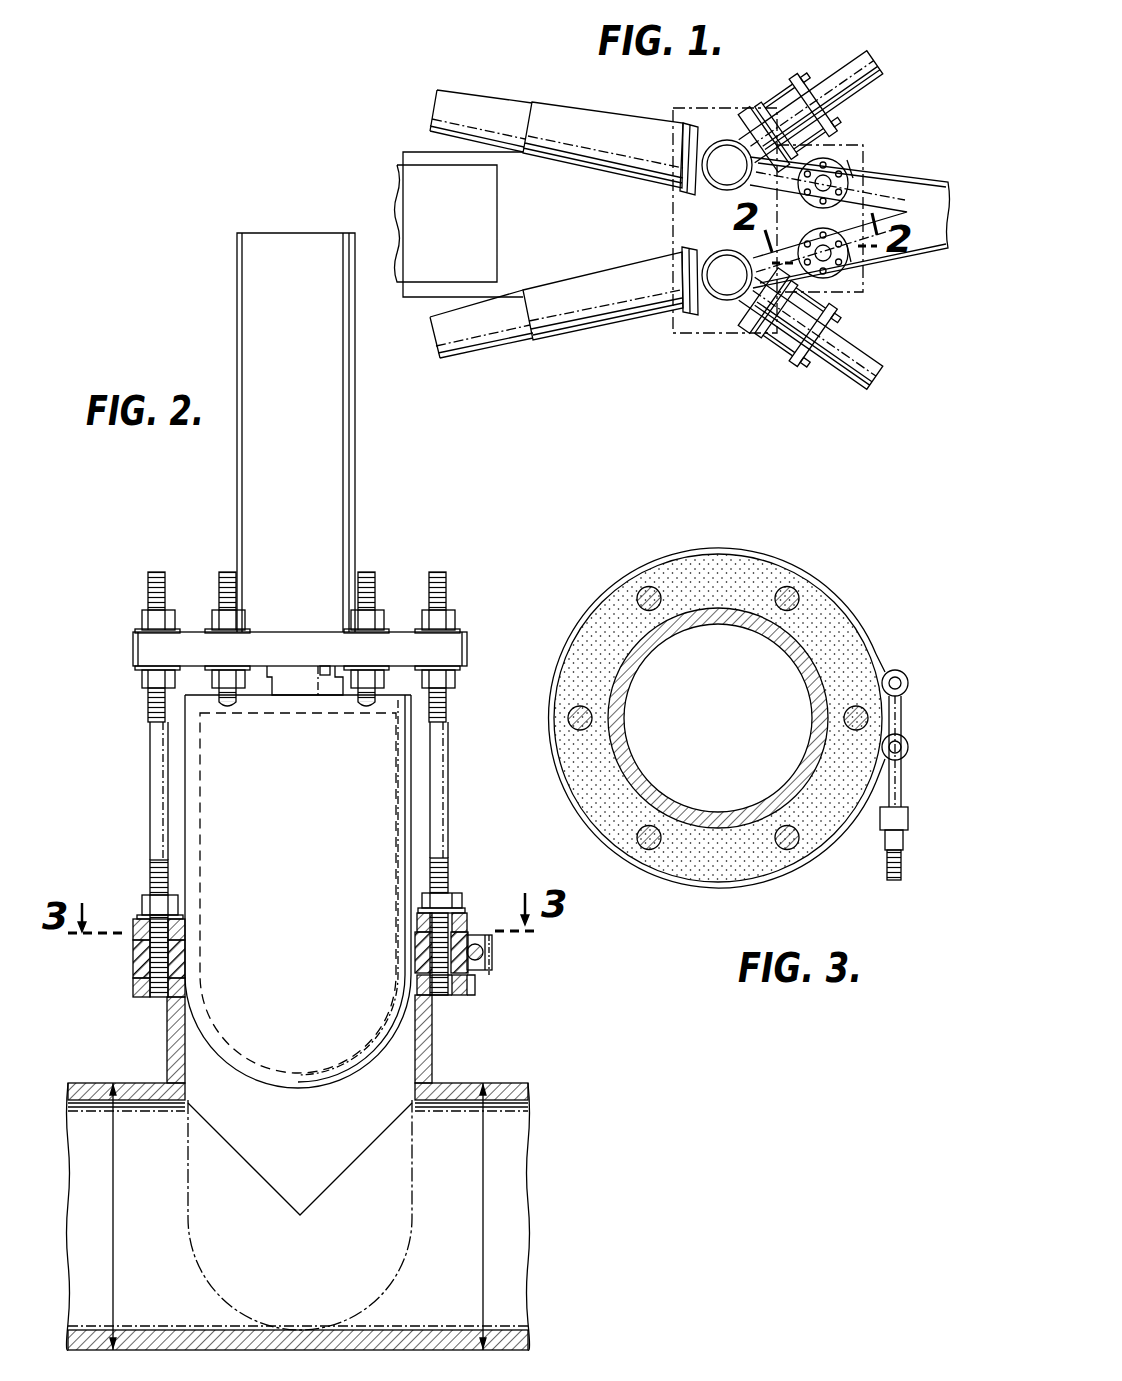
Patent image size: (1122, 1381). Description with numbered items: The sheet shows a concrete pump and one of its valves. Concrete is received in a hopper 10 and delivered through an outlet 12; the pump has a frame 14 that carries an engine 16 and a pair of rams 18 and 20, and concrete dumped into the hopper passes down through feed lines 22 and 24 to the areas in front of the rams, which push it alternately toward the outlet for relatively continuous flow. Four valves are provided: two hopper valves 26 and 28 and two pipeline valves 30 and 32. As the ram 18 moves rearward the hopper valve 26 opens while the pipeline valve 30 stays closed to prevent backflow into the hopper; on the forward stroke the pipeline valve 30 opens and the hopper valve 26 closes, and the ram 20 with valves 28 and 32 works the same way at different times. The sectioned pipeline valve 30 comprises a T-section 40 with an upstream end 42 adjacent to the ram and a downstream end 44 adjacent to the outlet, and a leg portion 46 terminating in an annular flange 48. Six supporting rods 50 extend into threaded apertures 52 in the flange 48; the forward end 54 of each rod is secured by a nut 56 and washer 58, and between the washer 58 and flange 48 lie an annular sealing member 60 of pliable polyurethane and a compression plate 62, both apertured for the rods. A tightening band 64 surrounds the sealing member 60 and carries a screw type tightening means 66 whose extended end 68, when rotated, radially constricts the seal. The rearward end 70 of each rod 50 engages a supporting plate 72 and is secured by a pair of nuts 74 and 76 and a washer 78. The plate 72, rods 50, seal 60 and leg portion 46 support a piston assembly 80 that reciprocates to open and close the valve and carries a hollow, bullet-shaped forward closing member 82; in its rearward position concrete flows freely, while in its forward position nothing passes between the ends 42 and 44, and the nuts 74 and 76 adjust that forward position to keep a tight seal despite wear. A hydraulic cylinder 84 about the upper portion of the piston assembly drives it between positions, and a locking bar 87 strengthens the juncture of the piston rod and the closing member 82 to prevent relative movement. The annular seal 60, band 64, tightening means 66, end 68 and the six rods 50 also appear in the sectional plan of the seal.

In FIG. 1, the hopper 10 is at (670, 106).
In FIG. 1, the outlet 12 is at (920, 187).
In FIG. 1, the frame 14 is at (415, 152).
In FIG. 1, the engine 16 is at (460, 226).
In FIG. 1, the ram 18 is at (583, 318).
In FIG. 1, the ram 20 is at (544, 112).
In FIG. 1, the feed line 22 is at (698, 323).
In FIG. 1, the feed line 24 is at (717, 150).
In FIG. 1, the hopper valve 26 is at (734, 323).
In FIG. 1, the hopper valve 28 is at (745, 118).
In FIG. 1, the pipeline valve 30 is at (847, 288).
In FIG. 2, the pipeline valve 30 is at (458, 739).
In FIG. 1, the pipeline valve 32 is at (843, 150).
In FIG. 2, the T-section 40 is at (487, 1079).
In FIG. 2, the upstream end 42 is at (69, 1230).
In FIG. 2, the downstream end 44 is at (528, 1188).
In FIG. 2, the leg portion 46 is at (428, 1066).
In FIG. 2, the annular flange 48 is at (466, 983).
In FIG. 2, the supporting rods 50 is at (152, 795).
In FIG. 3, the supporting rods 50 is at (651, 587).
In FIG. 2, the threaded apertures 52 is at (160, 993).
In FIG. 2, the forward end 54 is at (162, 995).
In FIG. 2, the nut 56 is at (146, 893).
In FIG. 2, the washer 58 is at (140, 915).
In FIG. 2, the annular sealing member 60 is at (416, 945).
In FIG. 3, the annular sealing member 60 is at (680, 856).
In FIG. 2, the compression plate 62 is at (138, 932).
In FIG. 2, the tightening band 64 is at (138, 966).
In FIG. 3, the tightening band 64 is at (713, 885).
In FIG. 2, the screw type tightening means 66 is at (512, 967).
In FIG. 3, the screw type tightening means 66 is at (905, 773).
In FIG. 2, the extended end 68 is at (483, 950).
In FIG. 3, the extended end 68 is at (897, 881).
In FIG. 2, the rearward end 70 is at (220, 585).
In FIG. 2, the supporting plate 72 is at (455, 640).
In FIG. 2, the nut 74 is at (143, 615).
In FIG. 2, the nut 76 is at (147, 683).
In FIG. 2, the washer 78 is at (142, 670).
In FIG. 2, the piston assembly 80 is at (296, 682).
In FIG. 3, the piston assembly 80 is at (797, 643).
In FIG. 2, the forward closing member 82 is at (316, 1080).
In FIG. 2, the hydraulic cylinder 84 is at (346, 515).
In FIG. 2, the locking bar 87 is at (335, 686).